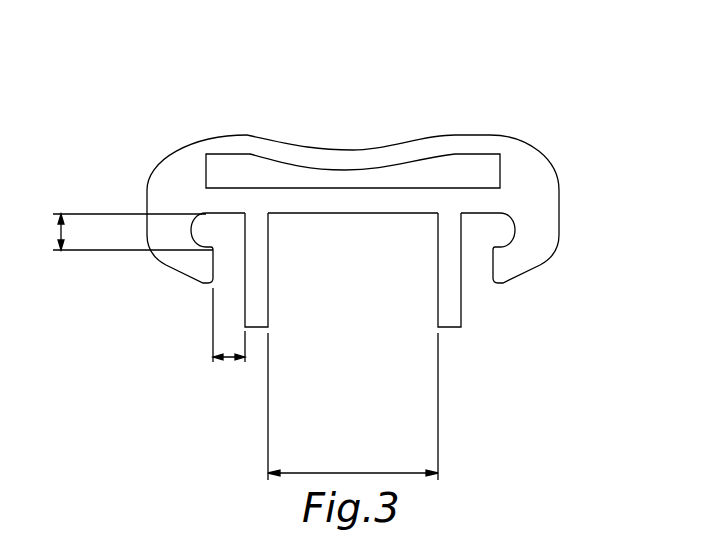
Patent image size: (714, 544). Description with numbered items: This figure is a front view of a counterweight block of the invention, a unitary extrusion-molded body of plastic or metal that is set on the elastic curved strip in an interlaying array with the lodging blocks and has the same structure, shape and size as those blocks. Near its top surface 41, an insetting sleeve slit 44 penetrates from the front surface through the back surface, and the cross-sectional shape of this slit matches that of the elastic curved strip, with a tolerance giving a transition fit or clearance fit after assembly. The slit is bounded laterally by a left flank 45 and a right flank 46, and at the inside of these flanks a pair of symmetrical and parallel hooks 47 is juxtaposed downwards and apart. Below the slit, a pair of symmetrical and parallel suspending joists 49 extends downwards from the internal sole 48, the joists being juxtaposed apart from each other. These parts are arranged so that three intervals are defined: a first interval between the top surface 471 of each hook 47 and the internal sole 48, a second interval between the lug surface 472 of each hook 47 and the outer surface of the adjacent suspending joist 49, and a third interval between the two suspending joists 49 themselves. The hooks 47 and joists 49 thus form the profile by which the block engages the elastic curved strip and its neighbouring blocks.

The top surface 41 is at (353, 150).
The insetting sleeve slit 44 is at (223, 163).
The left flank 45 is at (150, 184).
The right flank 46 is at (557, 190).
The hook 47 is at (193, 268).
The top surface of the hook 471 is at (98, 250).
The lug surface of the hook 472 is at (216, 268).
The internal sole 48 is at (100, 215).
The suspending joist 49 is at (258, 317).